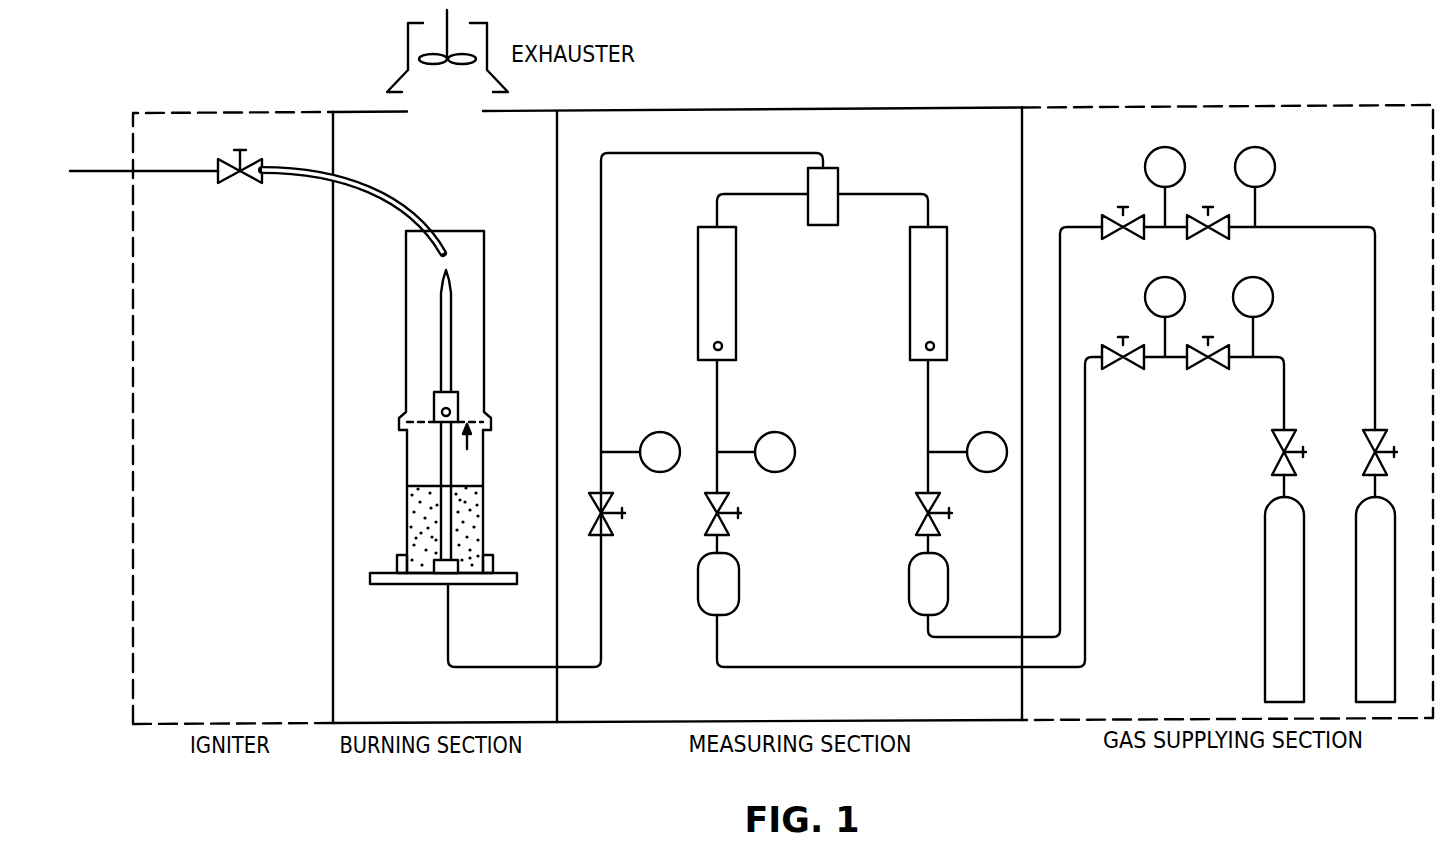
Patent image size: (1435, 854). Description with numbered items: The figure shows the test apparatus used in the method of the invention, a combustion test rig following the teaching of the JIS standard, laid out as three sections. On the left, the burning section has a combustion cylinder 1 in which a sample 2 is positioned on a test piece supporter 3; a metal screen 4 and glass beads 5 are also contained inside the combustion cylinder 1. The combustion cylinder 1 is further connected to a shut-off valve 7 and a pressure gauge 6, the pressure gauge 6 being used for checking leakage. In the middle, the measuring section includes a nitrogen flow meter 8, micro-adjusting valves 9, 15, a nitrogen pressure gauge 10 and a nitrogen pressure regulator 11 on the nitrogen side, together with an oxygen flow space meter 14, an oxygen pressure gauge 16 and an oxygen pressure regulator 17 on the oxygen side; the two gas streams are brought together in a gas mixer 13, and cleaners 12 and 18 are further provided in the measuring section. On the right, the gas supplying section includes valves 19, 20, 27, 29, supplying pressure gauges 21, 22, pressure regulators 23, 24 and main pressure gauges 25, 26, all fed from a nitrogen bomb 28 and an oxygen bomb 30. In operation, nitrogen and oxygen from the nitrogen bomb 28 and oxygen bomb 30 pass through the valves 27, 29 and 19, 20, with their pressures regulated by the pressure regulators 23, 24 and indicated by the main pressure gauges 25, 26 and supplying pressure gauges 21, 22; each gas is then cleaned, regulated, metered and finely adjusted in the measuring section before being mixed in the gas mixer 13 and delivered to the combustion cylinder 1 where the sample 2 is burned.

The combustion cylinder 1 is at (484, 262).
The sample 2 is at (452, 334).
The test piece supporter 3 is at (458, 404).
The metal screen 4 is at (467, 452).
The glass beads 5 is at (472, 514).
The pressure gauge 6 is at (653, 432).
The shut-off valve 7 is at (625, 513).
The nitrogen flow meter 8 is at (736, 258).
The micro-adjusting valve 9 is at (722, 350).
The nitrogen pressure gauge 10 is at (795, 448).
The nitrogen pressure regulator 11 is at (742, 513).
The cleaner 12 is at (739, 590).
The gas mixer 13 is at (838, 178).
The oxygen flow space meter 14 is at (947, 265).
The micro-adjusting valve 15 is at (933, 350).
The oxygen pressure gauge 16 is at (967, 440).
The oxygen pressure regulator 17 is at (953, 513).
The cleaner 18 is at (948, 590).
The valve 19 is at (1123, 207).
The valve 20 is at (1123, 337).
The supplying pressure gauge 21 is at (1162, 147).
The supplying pressure gauge 22 is at (1157, 282).
The pressure regulator 23 is at (1208, 207).
The pressure regulator 24 is at (1208, 337).
The main pressure gauge 25 is at (1267, 170).
The main pressure gauge 26 is at (1273, 297).
The valve 27 is at (1306, 452).
The nitrogen bomb 28 is at (1265, 598).
The valve 29 is at (1397, 452).
The oxygen bomb 30 is at (1356, 617).